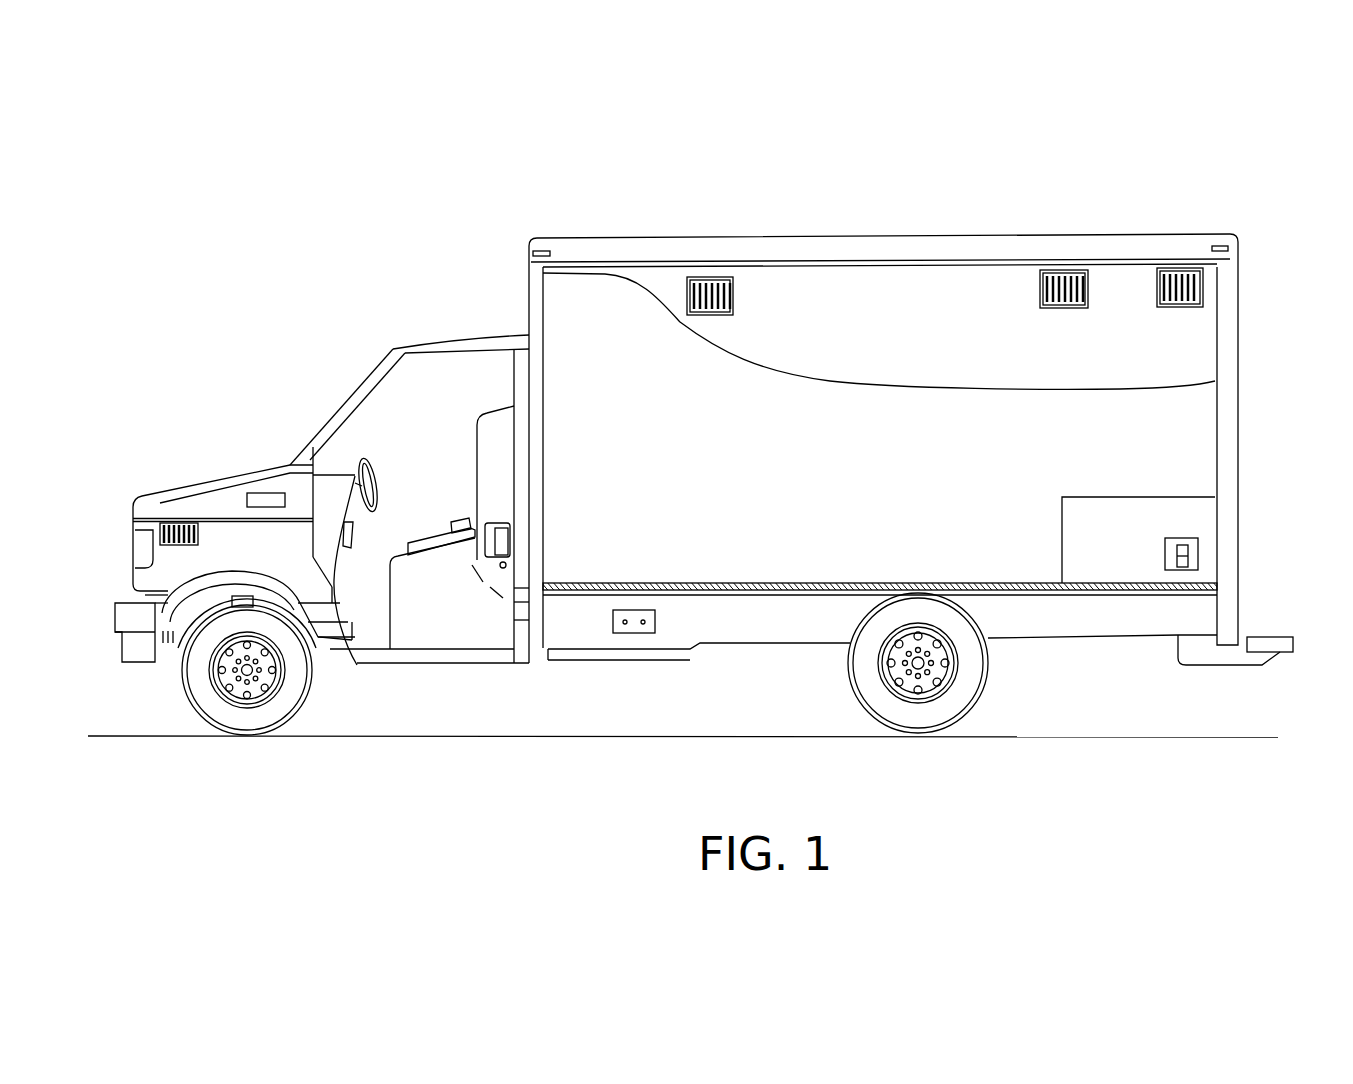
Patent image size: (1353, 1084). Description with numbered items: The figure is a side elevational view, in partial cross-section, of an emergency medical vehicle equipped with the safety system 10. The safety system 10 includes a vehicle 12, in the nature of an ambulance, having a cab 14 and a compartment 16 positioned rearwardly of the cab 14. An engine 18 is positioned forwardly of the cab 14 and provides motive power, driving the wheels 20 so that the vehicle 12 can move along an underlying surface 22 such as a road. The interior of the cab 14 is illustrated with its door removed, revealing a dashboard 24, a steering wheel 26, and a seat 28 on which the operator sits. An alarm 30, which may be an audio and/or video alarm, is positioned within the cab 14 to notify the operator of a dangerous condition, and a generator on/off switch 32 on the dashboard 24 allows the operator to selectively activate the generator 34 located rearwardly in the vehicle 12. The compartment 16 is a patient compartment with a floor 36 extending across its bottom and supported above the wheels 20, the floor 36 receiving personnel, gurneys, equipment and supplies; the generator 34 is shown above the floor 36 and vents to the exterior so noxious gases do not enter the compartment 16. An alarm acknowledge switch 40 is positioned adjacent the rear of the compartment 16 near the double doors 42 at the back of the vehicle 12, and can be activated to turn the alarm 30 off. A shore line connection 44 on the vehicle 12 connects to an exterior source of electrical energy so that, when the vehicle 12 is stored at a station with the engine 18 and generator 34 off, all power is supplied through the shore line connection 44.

The safety system 10 is at (774, 180).
The vehicle 12 is at (582, 236).
The cab 14 is at (425, 343).
The compartment 16 is at (963, 288).
The engine 18 is at (200, 478).
The wheels 20 is at (315, 690).
The underlying surface 22 is at (637, 735).
The dashboard 24 is at (337, 472).
The steering wheel 26 is at (378, 462).
The seat 28 is at (450, 556).
The alarm 30 is at (453, 520).
The generator on/off switch 32 is at (355, 533).
The generator 34 is at (1085, 495).
The floor 36 is at (748, 582).
The alarm acknowledge switch 40 is at (1163, 553).
The double doors 42 is at (1238, 485).
The shore line connection 44 is at (480, 583).